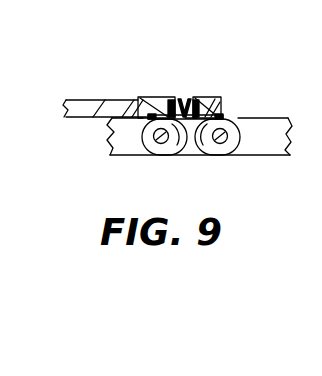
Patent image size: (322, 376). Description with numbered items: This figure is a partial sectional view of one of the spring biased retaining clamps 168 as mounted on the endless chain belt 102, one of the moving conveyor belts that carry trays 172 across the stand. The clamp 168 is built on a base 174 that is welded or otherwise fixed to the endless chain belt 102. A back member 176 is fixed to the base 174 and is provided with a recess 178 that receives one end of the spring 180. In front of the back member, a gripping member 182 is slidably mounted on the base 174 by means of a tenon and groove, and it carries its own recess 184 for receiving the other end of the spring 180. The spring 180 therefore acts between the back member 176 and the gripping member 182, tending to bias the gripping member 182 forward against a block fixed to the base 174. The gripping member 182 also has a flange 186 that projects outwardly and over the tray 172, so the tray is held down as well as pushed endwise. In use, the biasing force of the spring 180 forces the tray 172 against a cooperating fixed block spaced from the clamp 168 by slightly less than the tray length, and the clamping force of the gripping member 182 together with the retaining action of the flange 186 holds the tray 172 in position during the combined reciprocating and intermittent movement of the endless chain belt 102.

The endless chain belt 102 is at (268, 146).
The spring biased retaining clamp 168 is at (190, 17).
The tray 172 is at (81, 106).
The base 174 is at (214, 117).
The back member 176 is at (205, 97).
The recess 178 is at (215, 112).
The spring 180 is at (187, 97).
The gripping member 182 is at (160, 97).
The recess 184 is at (187, 118).
The flange 186 is at (140, 98).